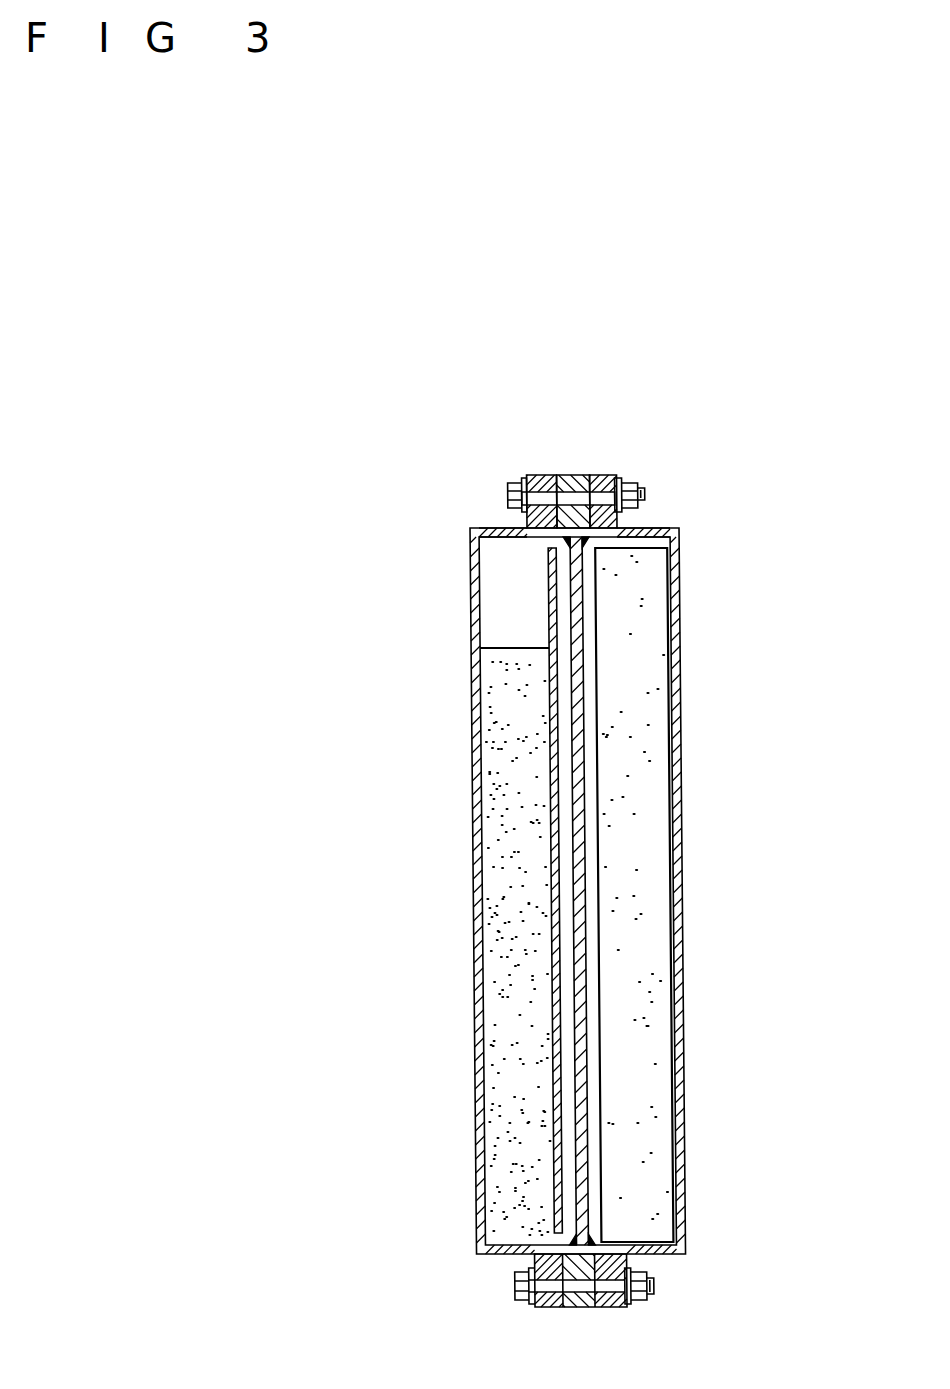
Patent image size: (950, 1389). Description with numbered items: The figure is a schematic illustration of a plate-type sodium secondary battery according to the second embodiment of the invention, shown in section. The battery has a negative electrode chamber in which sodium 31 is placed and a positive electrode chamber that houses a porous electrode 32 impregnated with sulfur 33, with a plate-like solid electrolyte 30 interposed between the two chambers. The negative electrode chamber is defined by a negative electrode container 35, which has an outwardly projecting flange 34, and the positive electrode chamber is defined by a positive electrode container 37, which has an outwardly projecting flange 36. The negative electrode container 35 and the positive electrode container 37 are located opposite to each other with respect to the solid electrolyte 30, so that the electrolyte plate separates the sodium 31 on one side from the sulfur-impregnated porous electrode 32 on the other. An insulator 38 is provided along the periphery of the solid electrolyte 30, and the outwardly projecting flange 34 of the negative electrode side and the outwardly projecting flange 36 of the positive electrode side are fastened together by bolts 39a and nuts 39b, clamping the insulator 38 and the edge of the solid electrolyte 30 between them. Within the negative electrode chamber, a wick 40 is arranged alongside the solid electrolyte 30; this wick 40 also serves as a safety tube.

The plate-like solid electrolyte 30 is at (575, 703).
The sodium 31 is at (492, 767).
The porous electrode 32 is at (632, 808).
The sulfur 33 is at (597, 1068).
The outwardly projecting flange 34 is at (537, 477).
The negative electrode container 35 is at (470, 553).
The outwardly projecting flange 36 is at (610, 477).
The positive electrode container 37 is at (680, 542).
The insulator 38 is at (573, 477).
The bolts 39a is at (504, 481).
The nuts 39b is at (632, 482).
The wick 40 is at (548, 603).